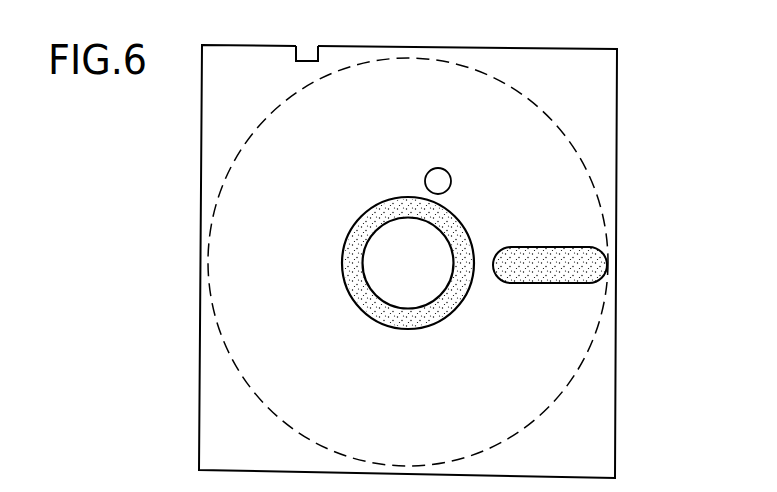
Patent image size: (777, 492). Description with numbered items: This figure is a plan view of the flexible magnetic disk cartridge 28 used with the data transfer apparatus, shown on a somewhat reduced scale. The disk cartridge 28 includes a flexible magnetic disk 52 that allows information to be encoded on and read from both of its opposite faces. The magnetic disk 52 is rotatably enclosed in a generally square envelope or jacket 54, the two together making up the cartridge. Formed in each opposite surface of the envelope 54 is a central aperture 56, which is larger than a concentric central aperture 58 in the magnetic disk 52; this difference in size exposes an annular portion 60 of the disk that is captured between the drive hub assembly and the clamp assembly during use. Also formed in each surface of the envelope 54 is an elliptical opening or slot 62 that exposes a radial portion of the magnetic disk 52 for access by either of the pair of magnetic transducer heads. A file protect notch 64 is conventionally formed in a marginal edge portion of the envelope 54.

The disk cartridge 28 is at (630, 68).
The flexible magnetic disk 52 is at (258, 127).
The envelope 54 is at (202, 124).
The central aperture 56 is at (445, 311).
The central aperture 58 is at (372, 240).
The annular portion 60 is at (402, 316).
The slot 62 is at (532, 254).
The file protect notch 64 is at (305, 46).